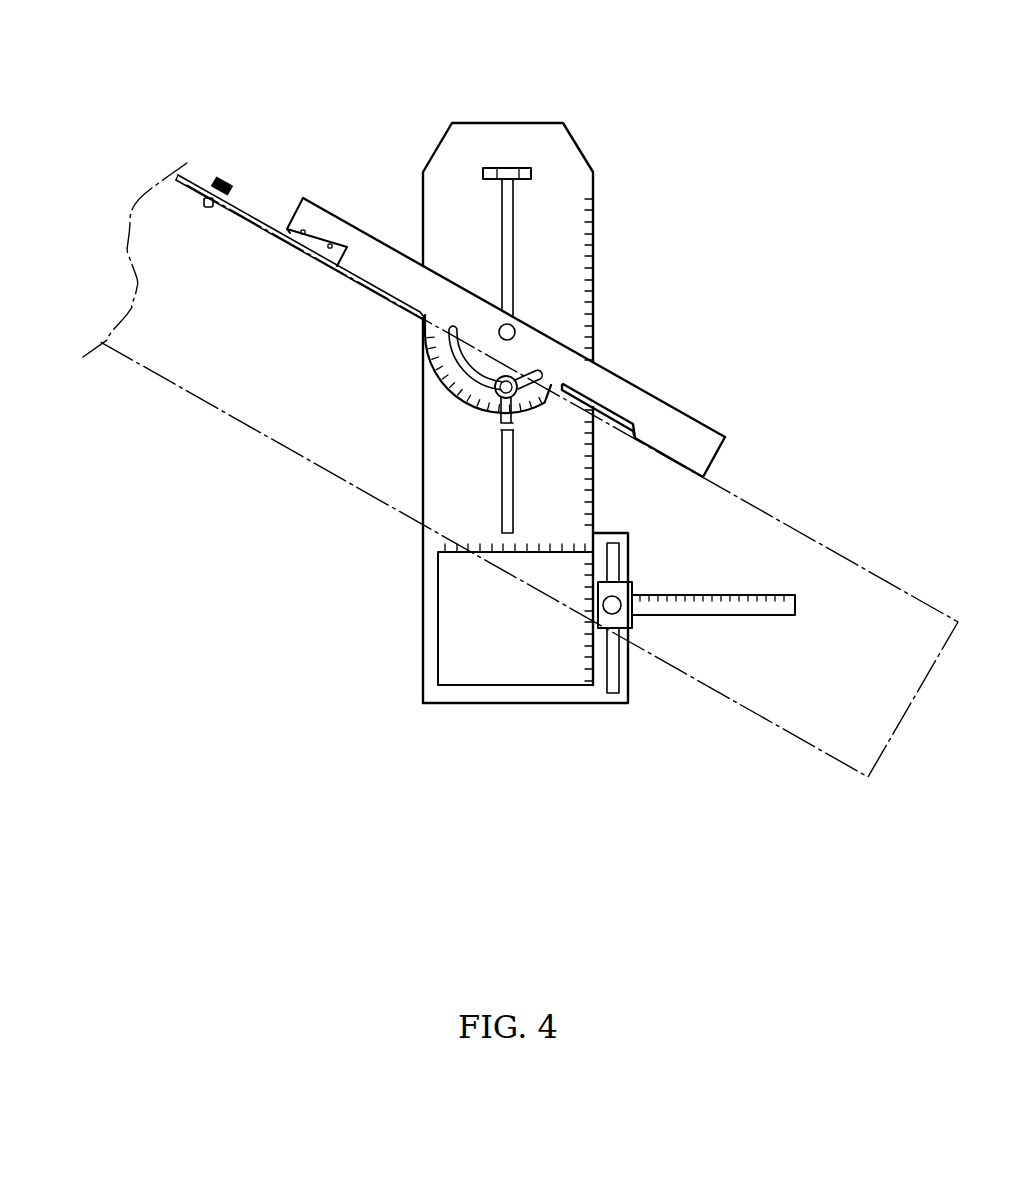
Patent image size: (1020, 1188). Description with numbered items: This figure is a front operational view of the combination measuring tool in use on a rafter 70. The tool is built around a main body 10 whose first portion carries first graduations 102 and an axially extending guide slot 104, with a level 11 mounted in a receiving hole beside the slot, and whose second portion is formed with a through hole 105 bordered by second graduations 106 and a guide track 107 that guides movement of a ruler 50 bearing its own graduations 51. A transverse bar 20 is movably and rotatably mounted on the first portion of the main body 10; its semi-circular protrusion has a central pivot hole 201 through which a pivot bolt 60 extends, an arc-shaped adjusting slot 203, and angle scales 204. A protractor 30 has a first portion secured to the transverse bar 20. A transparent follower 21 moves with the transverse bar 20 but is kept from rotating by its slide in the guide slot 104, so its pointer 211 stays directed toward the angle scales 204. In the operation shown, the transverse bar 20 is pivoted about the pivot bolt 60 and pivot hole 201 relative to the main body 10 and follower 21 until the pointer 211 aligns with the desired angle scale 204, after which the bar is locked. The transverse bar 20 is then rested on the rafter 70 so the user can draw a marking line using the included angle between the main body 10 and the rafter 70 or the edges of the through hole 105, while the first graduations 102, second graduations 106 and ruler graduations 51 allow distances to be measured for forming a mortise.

The main body 10 is at (600, 153).
The level 11 is at (498, 168).
The first graduations 102 is at (595, 275).
The guide slot 104 is at (508, 223).
The through hole 105 is at (460, 636).
The second graduations 106 is at (450, 549).
The guide track 107 is at (610, 677).
The transverse bar 20 is at (657, 381).
The pivot hole 201 is at (608, 312).
The pivot bolt 60 is at (512, 329).
The adjusting slot 203 is at (430, 336).
The angle scales 204 is at (442, 380).
The pointer 211 is at (498, 397).
The transparent follower 21 is at (517, 423).
The protractor 30 is at (253, 193).
The ruler 50 is at (745, 628).
The graduations 51 is at (755, 593).
The rafter 70 is at (233, 392).